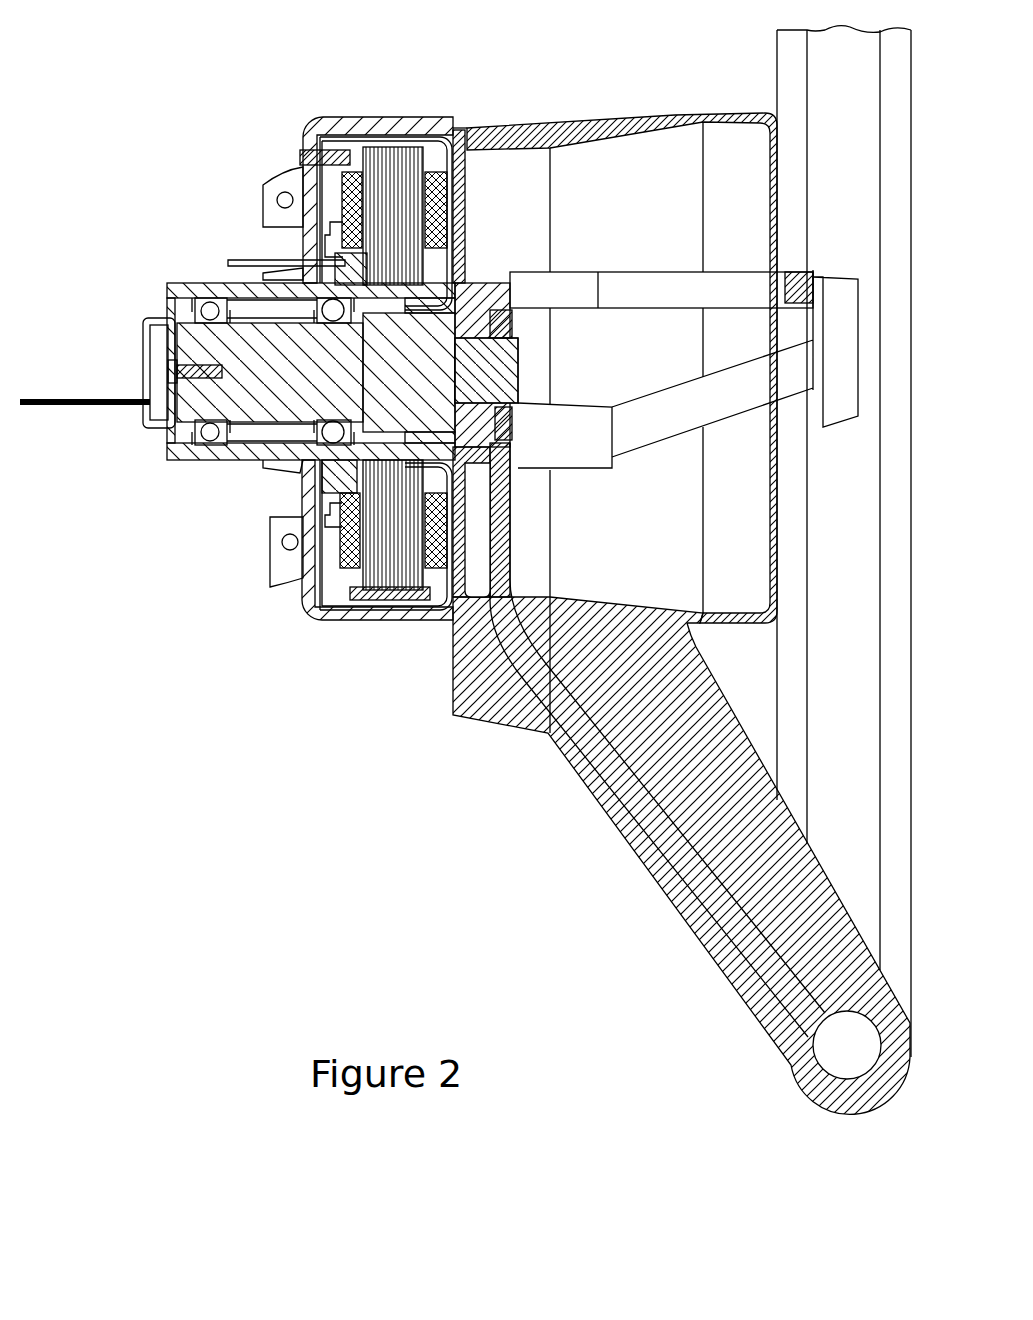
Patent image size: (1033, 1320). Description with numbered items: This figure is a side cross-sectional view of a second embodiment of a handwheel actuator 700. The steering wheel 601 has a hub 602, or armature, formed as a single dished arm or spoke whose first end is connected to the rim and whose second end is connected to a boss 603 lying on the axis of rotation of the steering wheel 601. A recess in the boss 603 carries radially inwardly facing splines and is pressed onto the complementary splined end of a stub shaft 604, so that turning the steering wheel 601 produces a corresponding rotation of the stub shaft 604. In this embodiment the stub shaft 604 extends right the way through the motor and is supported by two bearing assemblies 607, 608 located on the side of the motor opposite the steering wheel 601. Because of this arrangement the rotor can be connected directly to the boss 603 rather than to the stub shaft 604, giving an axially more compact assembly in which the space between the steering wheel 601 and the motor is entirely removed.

The handwheel actuator 700 is at (410, 822).
The steering wheel 601 is at (818, 1100).
The hub 602 is at (592, 806).
The boss 603 is at (480, 458).
The stub shaft 604 is at (485, 337).
The bearing assembly 607 is at (195, 458).
The bearing assembly 608 is at (333, 430).